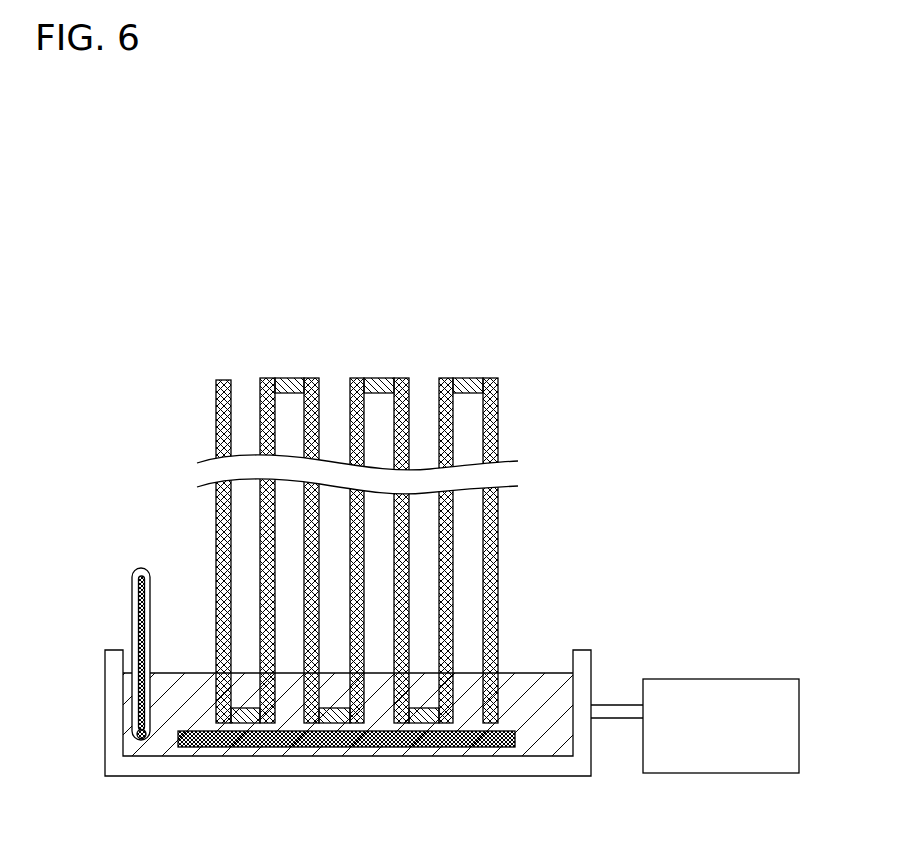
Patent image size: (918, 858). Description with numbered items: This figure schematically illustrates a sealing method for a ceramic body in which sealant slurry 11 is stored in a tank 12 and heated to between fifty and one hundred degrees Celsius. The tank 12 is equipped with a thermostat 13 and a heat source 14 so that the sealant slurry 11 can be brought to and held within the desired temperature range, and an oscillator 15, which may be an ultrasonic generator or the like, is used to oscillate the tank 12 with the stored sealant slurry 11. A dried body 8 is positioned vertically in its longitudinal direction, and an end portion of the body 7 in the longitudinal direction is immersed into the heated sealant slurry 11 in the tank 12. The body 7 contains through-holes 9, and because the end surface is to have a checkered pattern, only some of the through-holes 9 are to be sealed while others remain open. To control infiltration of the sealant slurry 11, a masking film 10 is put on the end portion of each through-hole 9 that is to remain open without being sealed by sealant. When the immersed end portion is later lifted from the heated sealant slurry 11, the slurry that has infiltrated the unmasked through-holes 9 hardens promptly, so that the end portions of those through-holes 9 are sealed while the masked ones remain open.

The body 7 is at (353, 495).
The dried body 8 is at (217, 403).
The through-holes 9 is at (245, 392).
The masking film 10 is at (373, 380).
The sealant slurry 11 is at (520, 677).
The tank 12 is at (157, 768).
The thermostat 13 is at (135, 602).
The heat source 14 is at (307, 757).
The oscillator 15 is at (748, 697).